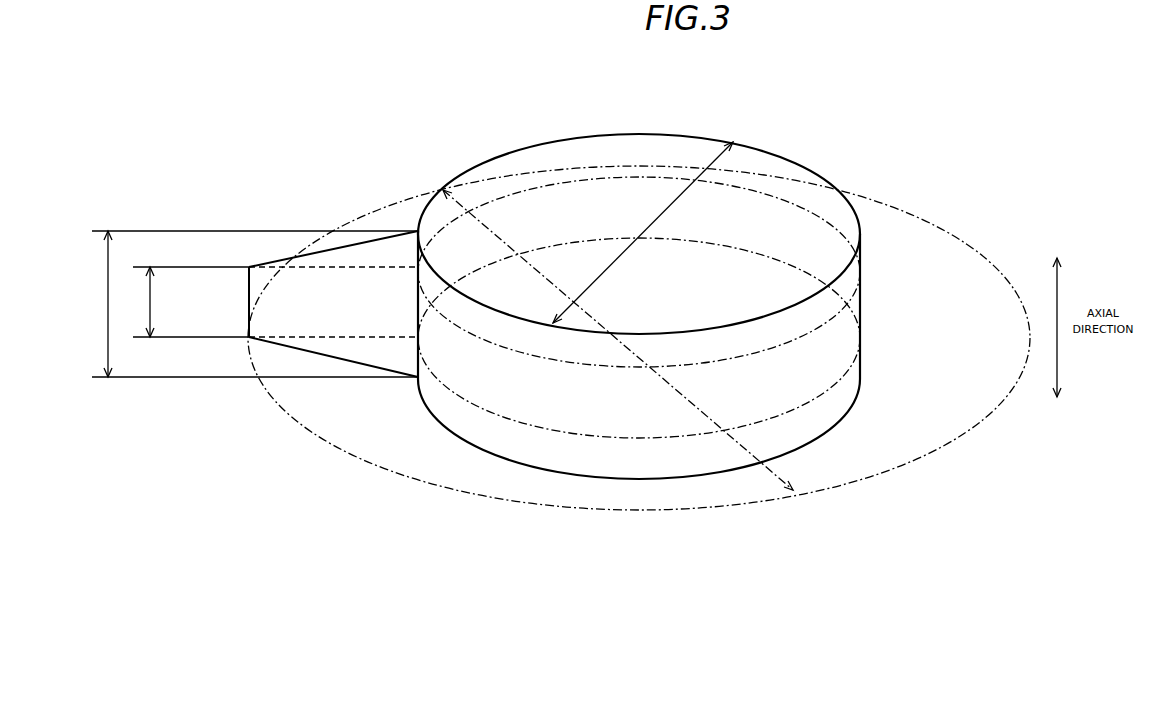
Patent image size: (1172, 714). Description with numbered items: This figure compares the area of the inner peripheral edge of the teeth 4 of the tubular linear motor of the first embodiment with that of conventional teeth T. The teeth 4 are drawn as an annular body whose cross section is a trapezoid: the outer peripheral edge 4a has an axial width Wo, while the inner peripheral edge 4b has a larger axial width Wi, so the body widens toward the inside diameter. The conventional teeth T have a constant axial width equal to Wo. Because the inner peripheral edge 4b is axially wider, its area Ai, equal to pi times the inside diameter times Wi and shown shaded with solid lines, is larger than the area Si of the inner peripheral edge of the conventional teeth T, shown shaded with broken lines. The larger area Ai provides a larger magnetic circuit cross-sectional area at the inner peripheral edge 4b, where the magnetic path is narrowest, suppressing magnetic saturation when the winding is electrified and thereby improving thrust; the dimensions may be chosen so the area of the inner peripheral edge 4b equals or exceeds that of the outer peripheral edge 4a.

The teeth 4 is at (298, 256).
The outer peripheral edge 4a is at (249, 302).
The inner peripheral edge 4b is at (420, 359).
The conventional teeth T is at (350, 343).
The axial width of the inner peripheral edge Wi is at (255, 304).
The axial width of the outer peripheral edge Wo is at (275, 302).
The area of the inner peripheral edge Ai is at (562, 150).
The area of the inner peripheral edge of the conventional teeth Si is at (817, 373).